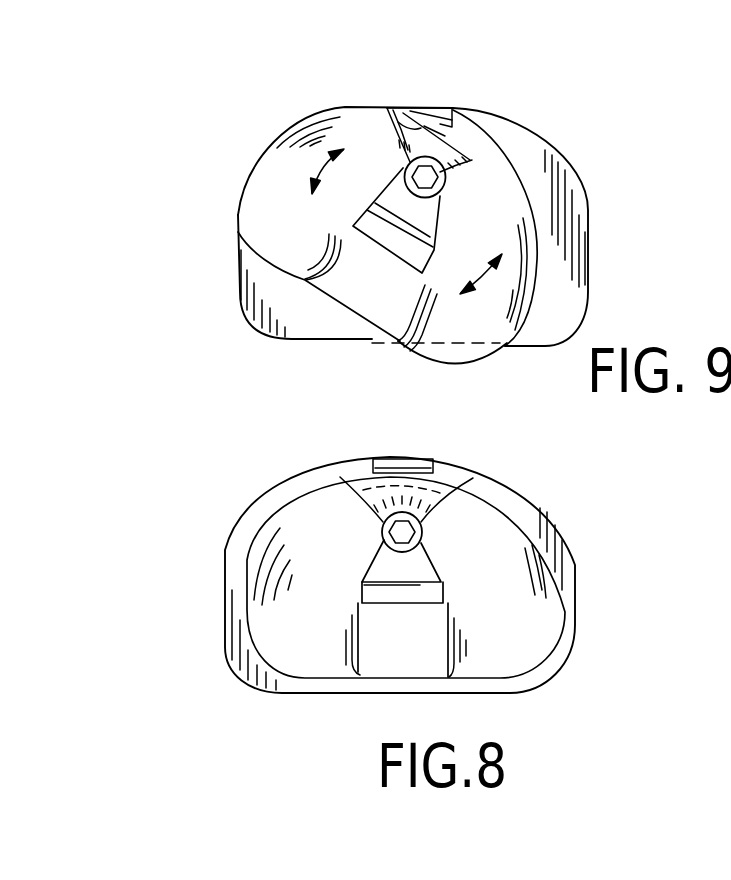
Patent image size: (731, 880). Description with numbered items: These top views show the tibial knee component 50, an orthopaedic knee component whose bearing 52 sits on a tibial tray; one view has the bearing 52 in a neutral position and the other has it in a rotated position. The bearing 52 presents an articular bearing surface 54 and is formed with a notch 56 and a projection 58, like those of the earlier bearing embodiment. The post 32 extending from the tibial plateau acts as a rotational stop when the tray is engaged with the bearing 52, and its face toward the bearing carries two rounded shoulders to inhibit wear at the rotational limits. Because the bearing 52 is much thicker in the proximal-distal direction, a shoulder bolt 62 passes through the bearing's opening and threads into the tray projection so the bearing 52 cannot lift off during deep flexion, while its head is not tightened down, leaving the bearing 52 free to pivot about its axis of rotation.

In FIG. 8, the tibial knee component 50 is at (572, 511).
In FIG. 9, the bearing 52 is at (319, 111).
In FIG. 9, the articular bearing surface 54 is at (283, 173).
In FIG. 8, the articular bearing surface 54 is at (302, 533).
In FIG. 9, the notch 56 is at (463, 158).
In FIG. 8, the notch 56 is at (440, 493).
In FIG. 9, the projection 58 is at (387, 233).
In FIG. 8, the projection 58 is at (407, 597).
In FIG. 9, the shoulder bolt 62 is at (422, 167).
In FIG. 8, the shoulder bolt 62 is at (402, 517).
In FIG. 9, the post 32 is at (437, 108).
In FIG. 8, the post 32 is at (407, 462).